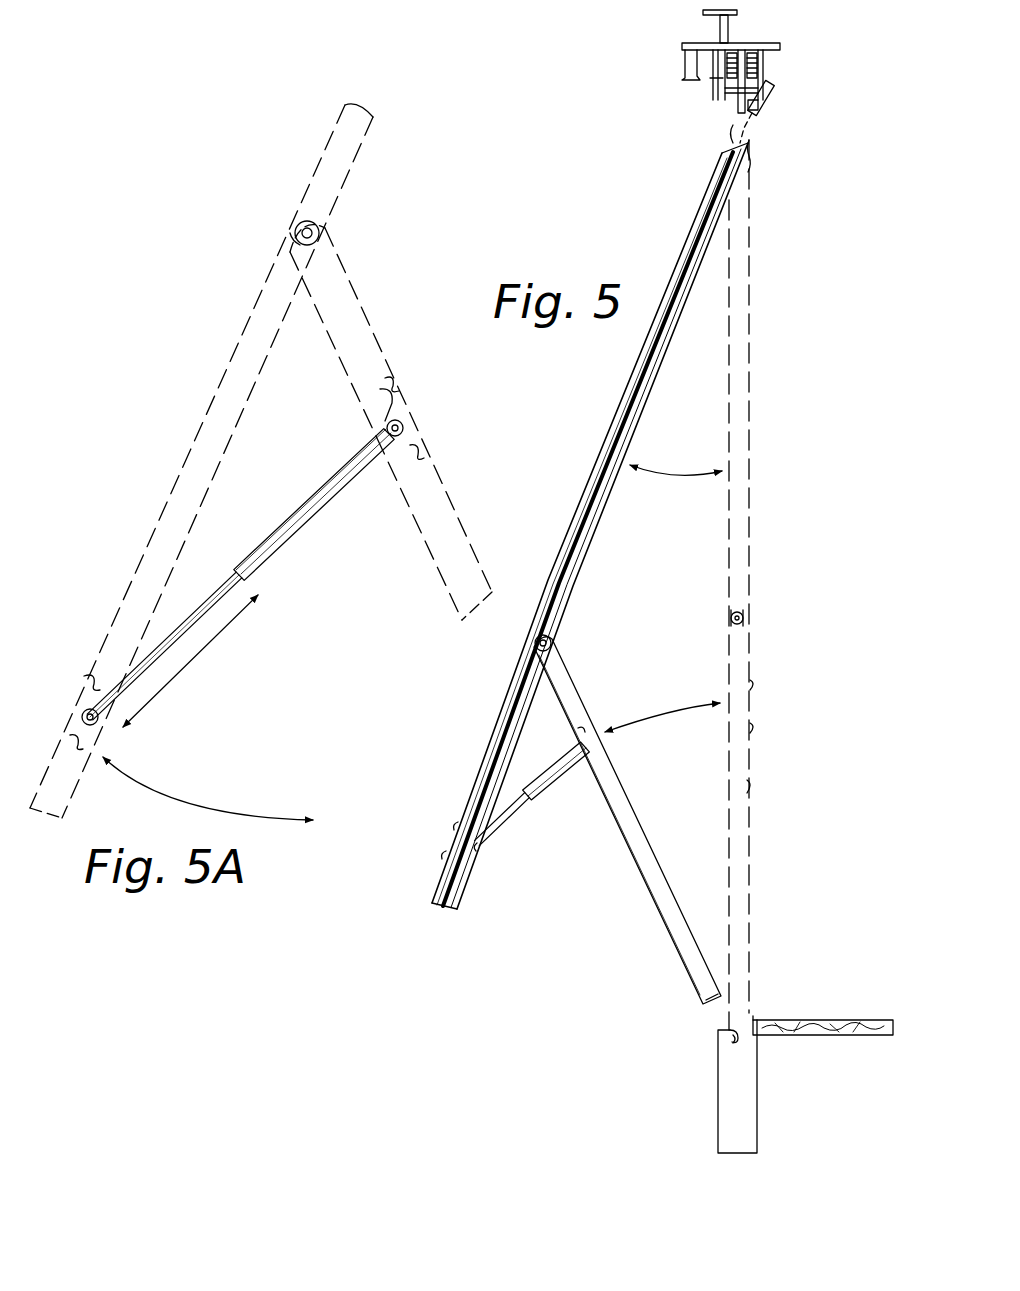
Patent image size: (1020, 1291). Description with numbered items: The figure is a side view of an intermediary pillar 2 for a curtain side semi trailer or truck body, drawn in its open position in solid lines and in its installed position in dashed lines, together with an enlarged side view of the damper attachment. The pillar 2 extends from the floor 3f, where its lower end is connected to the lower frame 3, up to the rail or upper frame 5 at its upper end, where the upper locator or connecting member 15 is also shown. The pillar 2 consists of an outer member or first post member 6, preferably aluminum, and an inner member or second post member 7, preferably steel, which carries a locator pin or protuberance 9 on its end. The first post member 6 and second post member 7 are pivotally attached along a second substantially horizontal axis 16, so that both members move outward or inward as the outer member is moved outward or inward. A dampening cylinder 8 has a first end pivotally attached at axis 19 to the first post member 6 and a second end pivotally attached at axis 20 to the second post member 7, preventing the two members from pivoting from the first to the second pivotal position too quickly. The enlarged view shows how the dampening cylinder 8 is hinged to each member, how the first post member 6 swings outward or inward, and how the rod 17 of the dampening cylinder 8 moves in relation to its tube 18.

In FIG. 5, the pillar 2 is at (805, 618).
In FIG. 5, the lower frame 3 is at (752, 1015).
In FIG. 5, the floor 3f is at (800, 1023).
In FIG. 5, the upper frame 5 is at (713, 104).
In FIG. 5, the first post member 6 is at (605, 481).
In FIG. 5A, the first post member 6 is at (192, 455).
In FIG. 5, the second post member 7 is at (658, 882).
In FIG. 5A, the second post member 7 is at (348, 303).
In FIG. 5, the dampening cylinder 8 is at (556, 790).
In FIG. 5A, the dampening cylinder 8 is at (258, 535).
In FIG. 5, the locator pin 9 is at (733, 1040).
In FIG. 5, the upper locator 15 is at (777, 100).
In FIG. 5, the pivotal axis 16 is at (552, 642).
In FIG. 5A, the rod 17 is at (207, 600).
In FIG. 5A, the tube 18 is at (348, 487).
In FIG. 5A, the first end pivotal attachment 19 is at (80, 710).
In FIG. 5A, the second end pivotal attachment 20 is at (407, 420).